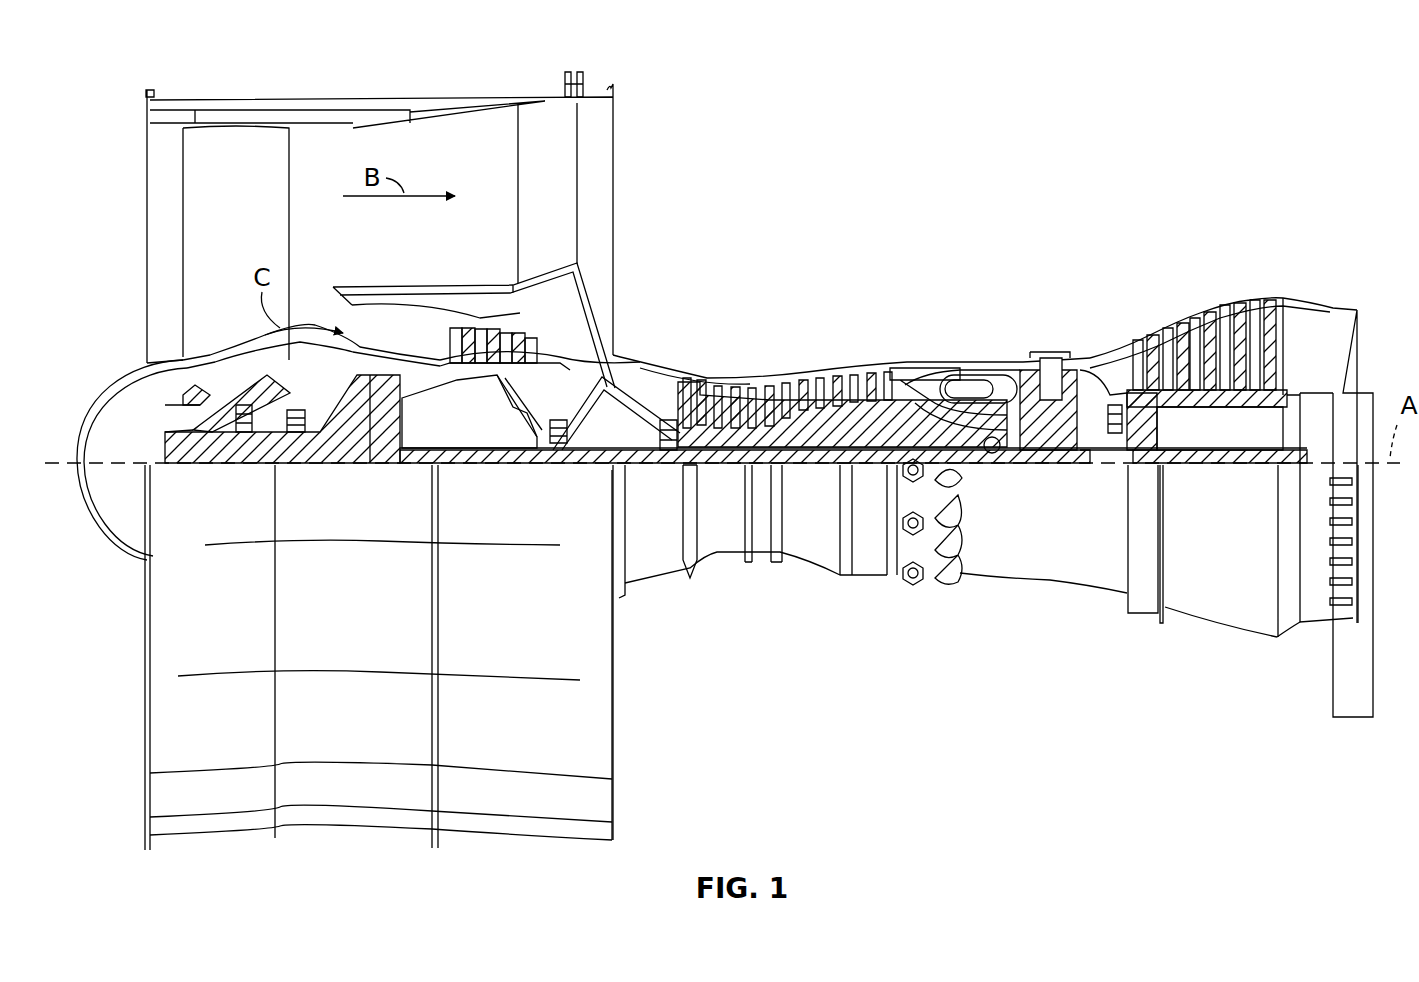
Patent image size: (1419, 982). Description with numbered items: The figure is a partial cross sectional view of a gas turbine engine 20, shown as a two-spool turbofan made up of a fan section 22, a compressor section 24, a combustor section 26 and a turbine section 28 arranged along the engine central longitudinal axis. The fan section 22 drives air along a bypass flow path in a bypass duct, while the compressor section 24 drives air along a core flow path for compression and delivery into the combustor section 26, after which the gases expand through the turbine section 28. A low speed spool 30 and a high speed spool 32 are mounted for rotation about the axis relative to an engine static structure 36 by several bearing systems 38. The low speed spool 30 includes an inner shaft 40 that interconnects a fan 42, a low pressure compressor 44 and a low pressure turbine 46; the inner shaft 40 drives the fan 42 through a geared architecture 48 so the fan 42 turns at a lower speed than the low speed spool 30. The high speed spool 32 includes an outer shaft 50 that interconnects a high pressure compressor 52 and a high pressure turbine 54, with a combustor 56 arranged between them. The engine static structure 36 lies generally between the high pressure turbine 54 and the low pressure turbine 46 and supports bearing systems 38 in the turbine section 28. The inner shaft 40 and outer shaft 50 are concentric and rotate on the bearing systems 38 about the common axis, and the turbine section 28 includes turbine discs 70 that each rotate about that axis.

The gas turbine engine 20 is at (1120, 147).
The fan section 22 is at (138, 92).
The compressor section 24 is at (430, 220).
The combustor section 26 is at (932, 220).
The turbine section 28 is at (1300, 220).
The low speed spool 30 is at (828, 470).
The high speed spool 32 is at (880, 425).
The engine static structure 36 is at (870, 586).
The bearing systems 38 is at (245, 432).
The inner shaft 40 is at (645, 455).
The fan 42 is at (236, 243).
The low pressure compressor 44 is at (528, 330).
The low pressure turbine 46 is at (1213, 322).
The geared architecture 48 is at (383, 432).
The outer shaft 50 is at (995, 450).
The high pressure compressor 52 is at (795, 430).
The high pressure turbine 54 is at (1055, 352).
The combustor 56 is at (990, 385).
The turbine discs 70 is at (1245, 435).